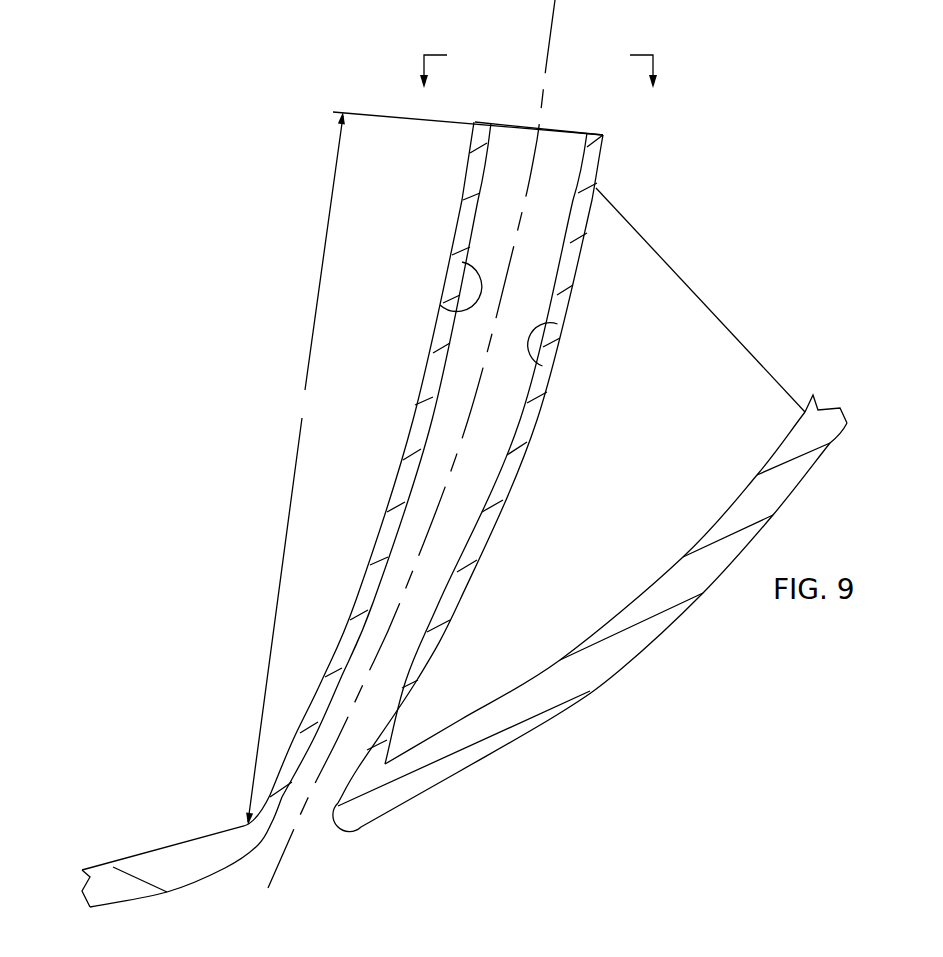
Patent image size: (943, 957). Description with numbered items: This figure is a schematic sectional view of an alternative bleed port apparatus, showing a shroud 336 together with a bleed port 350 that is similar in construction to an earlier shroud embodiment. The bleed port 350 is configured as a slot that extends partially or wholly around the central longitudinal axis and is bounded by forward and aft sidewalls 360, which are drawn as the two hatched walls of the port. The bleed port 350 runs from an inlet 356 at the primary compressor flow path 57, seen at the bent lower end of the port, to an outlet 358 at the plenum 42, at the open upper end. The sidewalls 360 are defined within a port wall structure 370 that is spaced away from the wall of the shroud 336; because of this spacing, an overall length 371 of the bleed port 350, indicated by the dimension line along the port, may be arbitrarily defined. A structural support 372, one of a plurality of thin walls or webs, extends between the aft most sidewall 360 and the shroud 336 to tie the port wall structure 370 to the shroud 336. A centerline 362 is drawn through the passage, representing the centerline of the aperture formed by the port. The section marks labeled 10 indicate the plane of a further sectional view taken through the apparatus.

The section line 10- 10 is at (540, 74).
The plenum 42 is at (508, 97).
The primary compressor flow path 57 is at (475, 845).
The shroud 336 is at (600, 672).
The bleed port 350 is at (428, 230).
The inlet 356 is at (258, 882).
The outlet 358 is at (552, 132).
The sidewalls 360 is at (441, 309).
The centerline 362 is at (543, 258).
The port wall structure 370 is at (596, 153).
The overall length 371 is at (295, 468).
The structural supports 372 is at (660, 342).